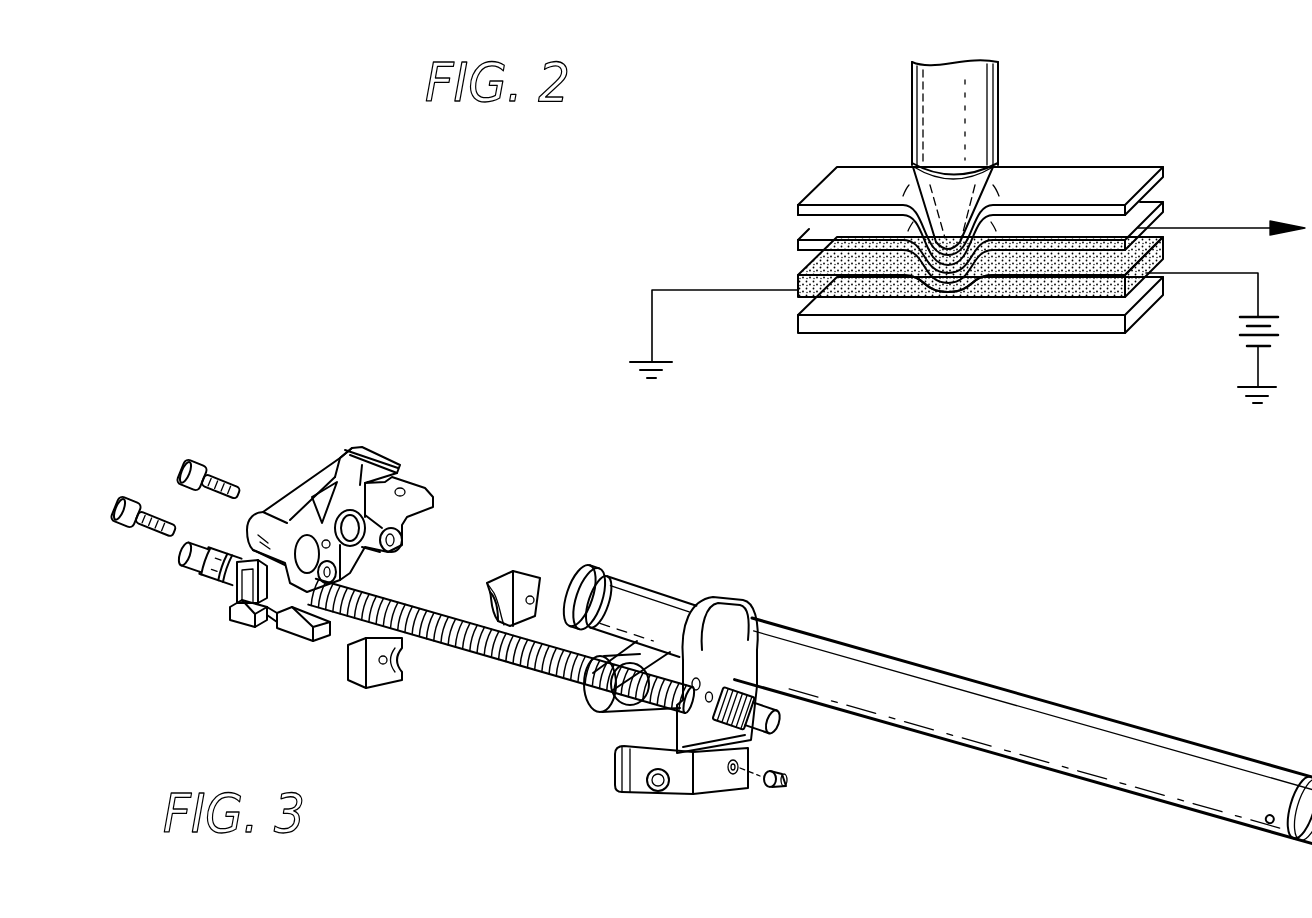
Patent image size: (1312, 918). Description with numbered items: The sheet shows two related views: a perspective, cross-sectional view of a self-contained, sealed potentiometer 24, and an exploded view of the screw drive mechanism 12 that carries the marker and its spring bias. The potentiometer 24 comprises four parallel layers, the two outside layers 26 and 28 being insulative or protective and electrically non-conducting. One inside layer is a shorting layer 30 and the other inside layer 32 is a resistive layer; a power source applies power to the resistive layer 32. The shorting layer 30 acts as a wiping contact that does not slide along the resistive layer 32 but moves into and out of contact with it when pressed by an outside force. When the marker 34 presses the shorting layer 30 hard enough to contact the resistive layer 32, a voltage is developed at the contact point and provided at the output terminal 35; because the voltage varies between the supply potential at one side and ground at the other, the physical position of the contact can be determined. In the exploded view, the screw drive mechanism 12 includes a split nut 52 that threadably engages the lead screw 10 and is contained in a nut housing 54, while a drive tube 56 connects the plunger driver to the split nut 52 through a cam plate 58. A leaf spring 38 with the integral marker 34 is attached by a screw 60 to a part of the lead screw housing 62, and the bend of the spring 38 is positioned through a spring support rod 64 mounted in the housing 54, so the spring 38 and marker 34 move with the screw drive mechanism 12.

In FIG. 3, the lead screw 10 is at (435, 593).
In FIG. 3, the screw drive mechanism 12 is at (312, 412).
In FIG. 2, the potentiometer 24 is at (768, 160).
In FIG. 2, the outside layer 26 is at (1113, 170).
In FIG. 2, the outside layer 28 is at (1032, 335).
In FIG. 2, the shorting layer 30 is at (1165, 201).
In FIG. 2, the resistive layer 32 is at (806, 270).
In FIG. 2, the marker 34 is at (992, 78).
In FIG. 3, the marker 34 is at (656, 788).
In FIG. 2, the output terminal 35 is at (1242, 228).
In FIG. 3, the leaf spring 38 is at (692, 798).
In FIG. 3, the split nut 52 is at (528, 572).
In FIG. 3, the nut housing 54 is at (430, 508).
In FIG. 3, the drive tube 56 is at (663, 607).
In FIG. 3, the cam plate 58 is at (598, 710).
In FIG. 3, the screw 60 is at (788, 790).
In FIG. 3, the lead screw housing 62 is at (745, 690).
In FIG. 3, the spring support rod 64 is at (237, 593).